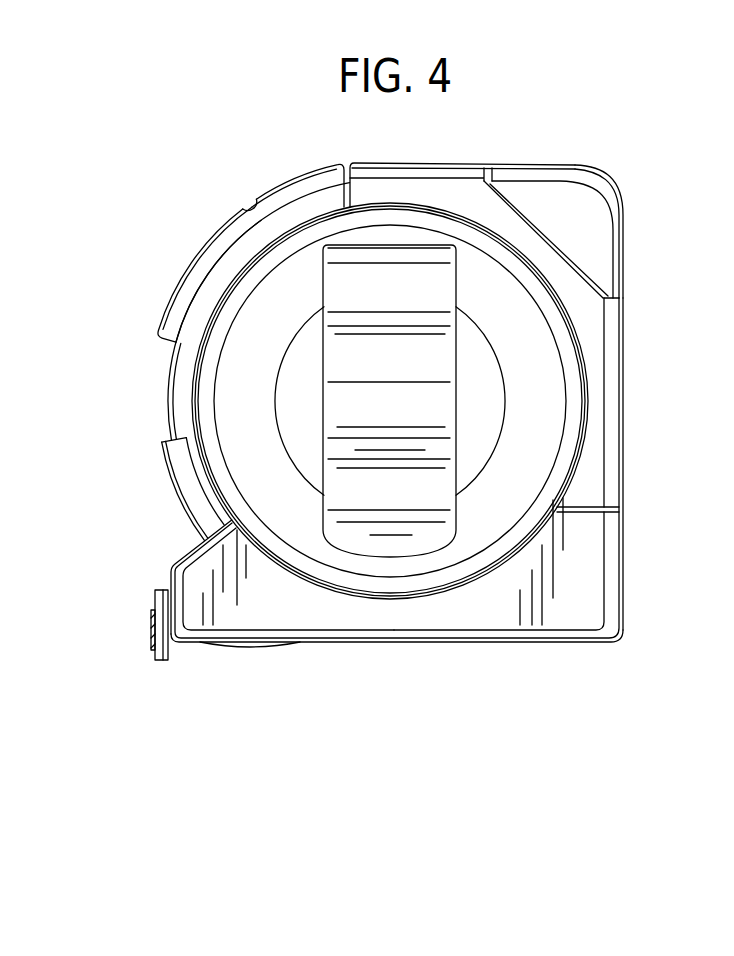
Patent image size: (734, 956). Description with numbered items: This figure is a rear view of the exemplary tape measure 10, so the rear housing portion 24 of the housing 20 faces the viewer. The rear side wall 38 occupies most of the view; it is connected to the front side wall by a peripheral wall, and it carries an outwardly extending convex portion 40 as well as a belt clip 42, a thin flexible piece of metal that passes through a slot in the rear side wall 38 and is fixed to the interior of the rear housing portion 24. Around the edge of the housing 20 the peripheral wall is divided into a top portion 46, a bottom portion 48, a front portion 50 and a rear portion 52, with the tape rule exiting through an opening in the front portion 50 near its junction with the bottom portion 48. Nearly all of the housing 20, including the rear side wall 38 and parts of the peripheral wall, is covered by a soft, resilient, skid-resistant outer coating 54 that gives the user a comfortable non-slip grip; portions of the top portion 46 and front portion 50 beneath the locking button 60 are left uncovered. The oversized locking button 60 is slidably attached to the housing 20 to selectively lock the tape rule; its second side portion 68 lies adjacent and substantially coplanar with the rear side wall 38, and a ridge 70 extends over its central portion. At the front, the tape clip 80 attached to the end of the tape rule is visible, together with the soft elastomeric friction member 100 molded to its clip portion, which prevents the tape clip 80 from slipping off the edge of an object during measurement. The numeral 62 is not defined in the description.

The tape measure 10 is at (603, 125).
The housing 20 is at (637, 318).
The rear housing portion 24 is at (596, 580).
The rear side wall 38 is at (265, 620).
The convex portion 40 is at (376, 593).
The belt clip 42 is at (425, 410).
The top portion 46 is at (516, 153).
The bottom portion 48 is at (404, 655).
The front portion 50 is at (158, 394).
The rear portion 52 is at (637, 380).
The outer coating 54 is at (603, 237).
The locking button 60 is at (192, 241).
The bumper segment 62 is at (300, 177).
The second side portion 68 is at (190, 312).
The ridge 70 is at (242, 195).
The tape clip 80 is at (142, 593).
The friction member 100 is at (168, 656).